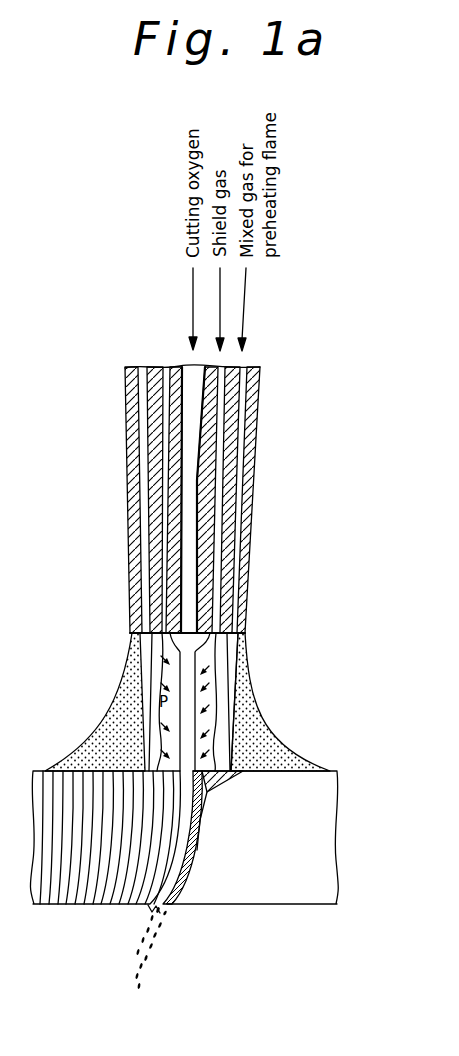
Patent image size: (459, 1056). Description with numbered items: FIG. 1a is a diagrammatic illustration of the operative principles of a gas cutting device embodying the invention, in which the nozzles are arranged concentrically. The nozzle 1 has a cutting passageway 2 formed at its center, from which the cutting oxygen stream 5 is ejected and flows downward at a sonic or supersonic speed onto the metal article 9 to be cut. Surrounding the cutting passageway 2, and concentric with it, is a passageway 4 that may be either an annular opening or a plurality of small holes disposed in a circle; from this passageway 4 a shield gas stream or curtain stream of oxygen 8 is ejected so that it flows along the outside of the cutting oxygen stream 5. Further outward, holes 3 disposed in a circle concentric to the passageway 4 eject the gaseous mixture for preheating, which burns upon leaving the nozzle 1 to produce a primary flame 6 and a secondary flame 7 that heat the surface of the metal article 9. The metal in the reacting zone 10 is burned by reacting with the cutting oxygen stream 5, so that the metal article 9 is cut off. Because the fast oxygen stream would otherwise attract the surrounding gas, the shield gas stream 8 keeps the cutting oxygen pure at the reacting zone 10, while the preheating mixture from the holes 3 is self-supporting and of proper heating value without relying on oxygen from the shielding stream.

The nozzle 1 is at (257, 397).
The cutting passageway 2 is at (198, 432).
The holes 3 is at (243, 448).
The passageway 4 is at (218, 477).
The cutting oxygen stream 5 is at (190, 663).
The primary flame 6 is at (230, 697).
The secondary flame 7 is at (273, 745).
The shield gas stream 8 is at (215, 720).
The metal article 9 is at (320, 838).
The reacting zone 10 is at (197, 850).